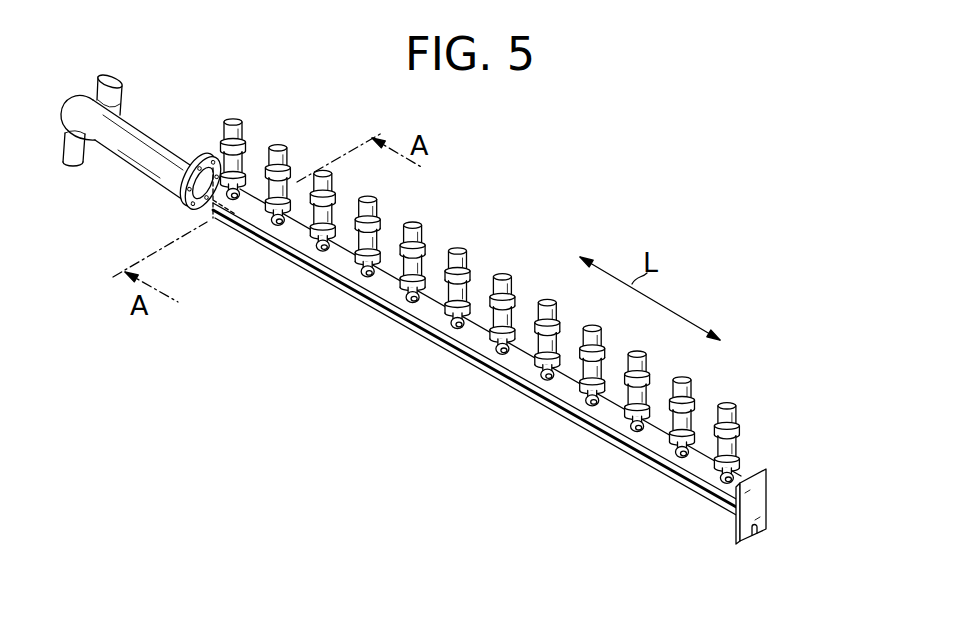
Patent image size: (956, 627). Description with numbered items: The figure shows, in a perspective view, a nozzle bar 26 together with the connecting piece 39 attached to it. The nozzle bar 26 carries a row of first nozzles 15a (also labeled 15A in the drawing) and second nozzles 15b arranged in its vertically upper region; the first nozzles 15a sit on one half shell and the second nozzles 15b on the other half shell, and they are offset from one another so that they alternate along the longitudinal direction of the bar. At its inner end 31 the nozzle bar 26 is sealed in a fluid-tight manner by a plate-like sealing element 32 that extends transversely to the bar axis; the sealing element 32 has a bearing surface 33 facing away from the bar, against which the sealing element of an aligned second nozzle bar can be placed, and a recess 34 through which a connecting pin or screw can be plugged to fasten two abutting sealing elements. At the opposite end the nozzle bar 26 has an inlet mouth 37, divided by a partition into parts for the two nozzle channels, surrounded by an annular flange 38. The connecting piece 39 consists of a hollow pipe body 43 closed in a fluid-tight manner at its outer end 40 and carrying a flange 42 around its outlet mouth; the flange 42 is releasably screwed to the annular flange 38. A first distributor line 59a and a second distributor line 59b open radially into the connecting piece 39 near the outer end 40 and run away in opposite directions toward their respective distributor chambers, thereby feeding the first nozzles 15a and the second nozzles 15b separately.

The first nozzles 15a is at (278, 147).
The first nozzles 15A is at (502, 277).
The second nozzles 15b is at (313, 240).
The nozzle bar 26 is at (385, 298).
The inner end 31 is at (728, 498).
The sealing element 32 is at (762, 485).
The bearing surface 33 is at (757, 507).
The recess 34 is at (753, 533).
The inlet mouth 37 is at (222, 218).
The annular flange 38 is at (188, 203).
The connecting piece 39 is at (151, 126).
The outer end 40 is at (65, 100).
The flange 42 is at (202, 157).
The hollow pipe body 43 is at (138, 158).
The first distributor line 59a is at (114, 78).
The second distributor line 59b is at (70, 166).